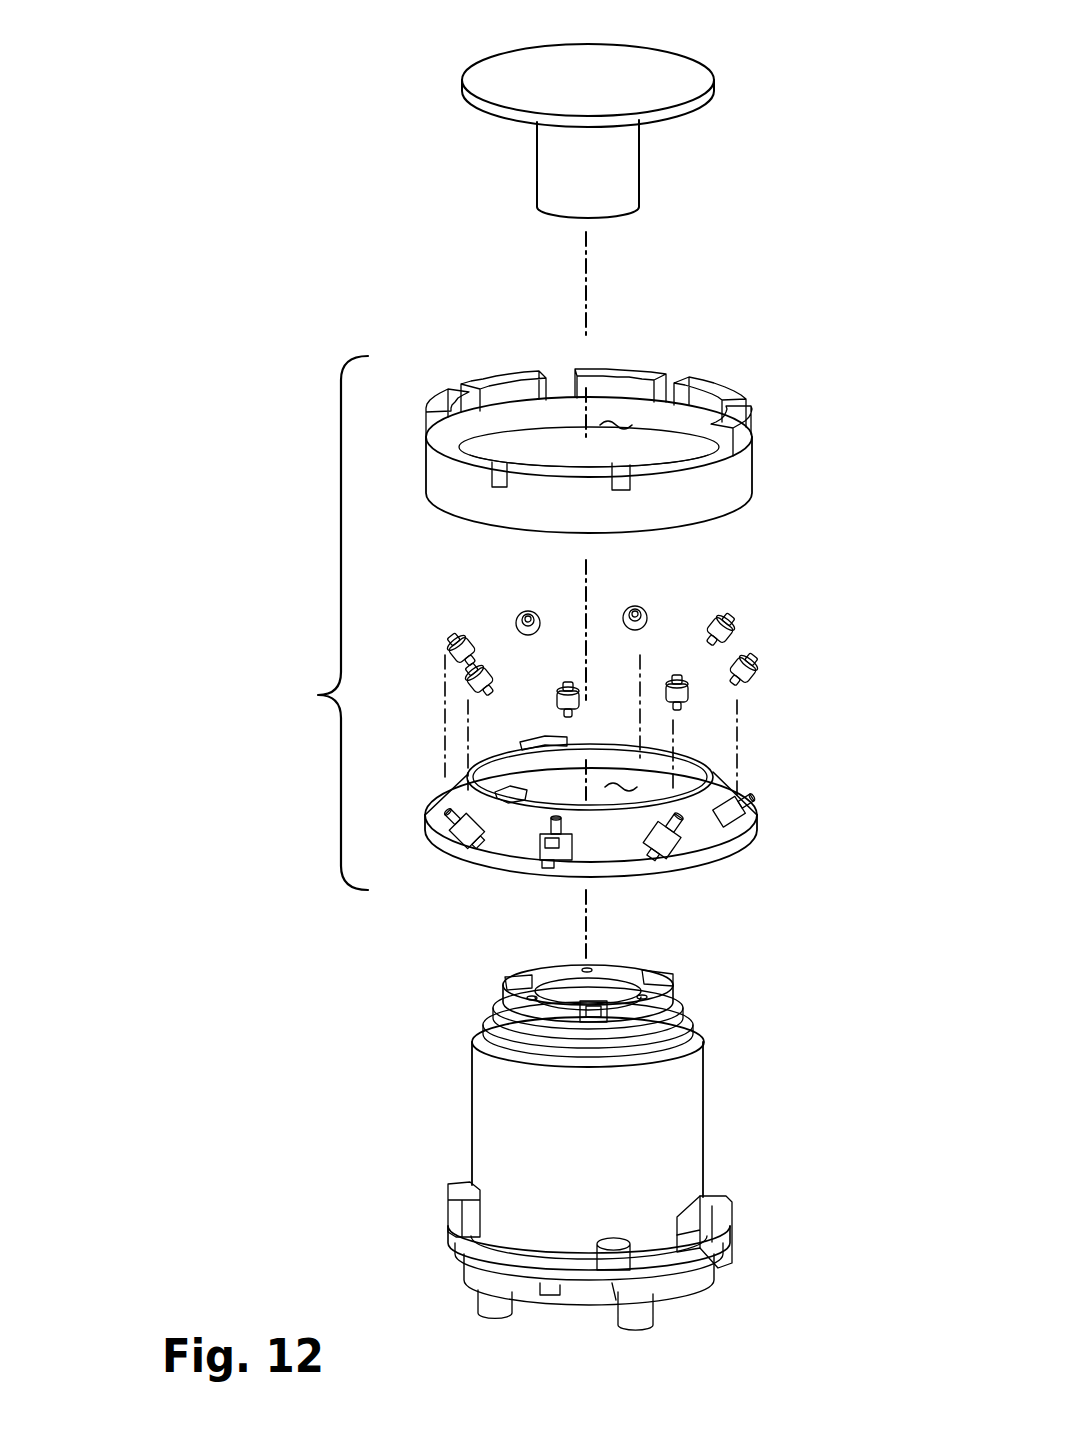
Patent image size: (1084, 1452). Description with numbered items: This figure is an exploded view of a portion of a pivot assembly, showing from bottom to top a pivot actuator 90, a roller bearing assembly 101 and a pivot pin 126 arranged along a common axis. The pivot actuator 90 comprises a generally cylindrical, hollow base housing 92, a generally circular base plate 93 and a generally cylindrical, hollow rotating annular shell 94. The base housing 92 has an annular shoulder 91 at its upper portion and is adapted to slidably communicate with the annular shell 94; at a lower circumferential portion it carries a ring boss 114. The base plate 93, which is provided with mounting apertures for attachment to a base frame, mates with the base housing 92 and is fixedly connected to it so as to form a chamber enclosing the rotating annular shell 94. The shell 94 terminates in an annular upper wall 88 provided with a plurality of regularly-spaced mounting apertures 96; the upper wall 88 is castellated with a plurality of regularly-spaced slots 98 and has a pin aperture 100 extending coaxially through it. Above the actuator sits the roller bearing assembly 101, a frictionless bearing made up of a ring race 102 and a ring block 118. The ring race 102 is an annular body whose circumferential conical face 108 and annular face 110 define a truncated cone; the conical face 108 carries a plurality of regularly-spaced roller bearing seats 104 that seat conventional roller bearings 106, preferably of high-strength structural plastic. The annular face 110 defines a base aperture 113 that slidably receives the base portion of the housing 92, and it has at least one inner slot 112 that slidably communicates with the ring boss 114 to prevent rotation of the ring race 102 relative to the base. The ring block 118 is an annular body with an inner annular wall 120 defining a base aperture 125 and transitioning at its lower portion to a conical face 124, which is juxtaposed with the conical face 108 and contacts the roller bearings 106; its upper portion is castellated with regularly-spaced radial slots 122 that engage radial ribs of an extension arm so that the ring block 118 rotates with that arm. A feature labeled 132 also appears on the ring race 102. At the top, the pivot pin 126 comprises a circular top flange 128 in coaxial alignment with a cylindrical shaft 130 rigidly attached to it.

The top flange 128 is at (510, 80).
The pivot pin 126 is at (537, 143).
The cylindrical shaft 130 is at (560, 184).
The ring block 118 is at (637, 420).
The inner annular wall 120 is at (513, 410).
The radial slots 122 is at (560, 395).
The conical face 124 is at (668, 440).
The base aperture 125 is at (611, 412).
The roller bearing assembly 101 is at (313, 623).
The roller bearings 106 is at (515, 620).
The tab 132 is at (538, 741).
The inner slot 112 is at (520, 794).
The base aperture 113 is at (619, 773).
The annular face 110 is at (492, 764).
The roller bearing seats 104 is at (462, 826).
The conical face 108 is at (620, 842).
The ring race 102 is at (589, 803).
The mounting apertures 96 is at (587, 973).
The pin aperture 100 is at (595, 991).
The slots 98 is at (520, 983).
The upper wall 88 is at (512, 998).
The rotating annular shell 94 is at (655, 1011).
The annular shoulder 91 is at (685, 1040).
The base housing 92 is at (675, 1090).
The pivot actuator 90 is at (608, 1120).
The ring boss 114 is at (705, 1228).
The base plate 93 is at (480, 1286).